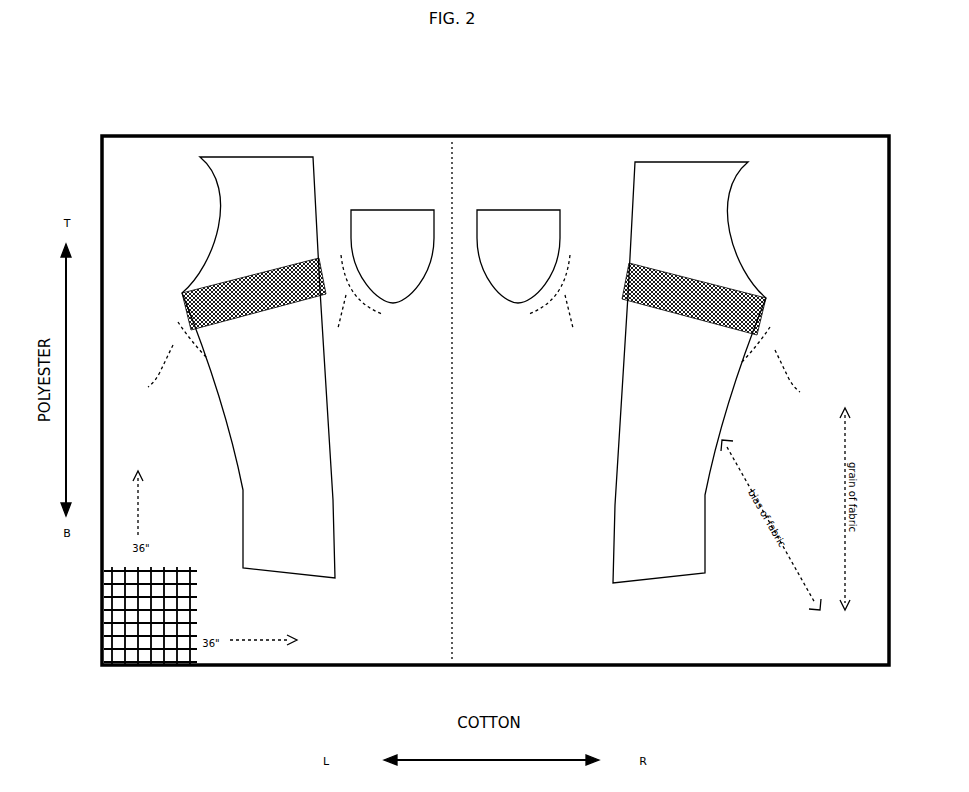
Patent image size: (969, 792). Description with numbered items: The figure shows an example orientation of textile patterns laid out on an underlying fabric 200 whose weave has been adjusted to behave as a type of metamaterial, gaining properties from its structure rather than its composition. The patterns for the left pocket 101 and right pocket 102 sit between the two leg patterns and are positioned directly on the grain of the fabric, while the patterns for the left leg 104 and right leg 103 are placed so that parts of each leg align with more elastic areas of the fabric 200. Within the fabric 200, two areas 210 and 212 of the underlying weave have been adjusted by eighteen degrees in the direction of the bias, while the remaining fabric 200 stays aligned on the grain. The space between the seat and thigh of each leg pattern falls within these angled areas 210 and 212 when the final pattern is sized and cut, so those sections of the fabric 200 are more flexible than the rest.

The fabric 200 is at (736, 136).
The left pocket 101 is at (367, 210).
The right pocket 102 is at (545, 210).
The right leg 103 is at (614, 500).
The left leg 104 is at (333, 496).
The angled area of the fabric weave 210 is at (722, 290).
The angled area of the fabric weave 212 is at (223, 288).